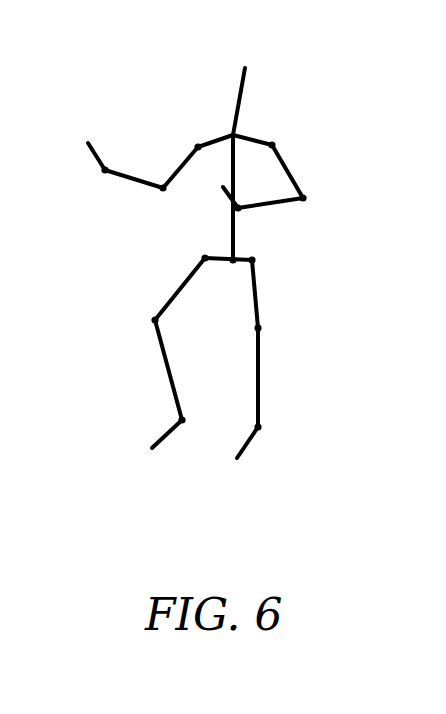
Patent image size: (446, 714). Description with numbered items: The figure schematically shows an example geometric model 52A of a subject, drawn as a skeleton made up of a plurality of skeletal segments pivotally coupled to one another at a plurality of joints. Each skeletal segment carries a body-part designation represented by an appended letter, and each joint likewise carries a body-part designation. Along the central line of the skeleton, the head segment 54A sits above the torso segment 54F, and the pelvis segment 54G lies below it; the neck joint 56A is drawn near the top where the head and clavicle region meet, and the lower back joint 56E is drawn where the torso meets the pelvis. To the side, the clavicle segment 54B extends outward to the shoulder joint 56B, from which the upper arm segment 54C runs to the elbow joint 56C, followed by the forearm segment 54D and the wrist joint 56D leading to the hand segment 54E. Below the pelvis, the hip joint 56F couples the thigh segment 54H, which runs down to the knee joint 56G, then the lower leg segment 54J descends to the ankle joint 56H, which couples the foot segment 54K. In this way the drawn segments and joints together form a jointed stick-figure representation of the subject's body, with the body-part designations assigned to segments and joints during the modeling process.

The geometric model 52A is at (340, 444).
The head skeletal segment 54A is at (244, 80).
The clavicle skeletal segment 54B is at (252, 137).
The upper arm skeletal segment 54C is at (188, 158).
The forearm skeletal segment 54D is at (275, 207).
The hand skeletal segment 54E is at (92, 145).
The torso skeletal segment 54F is at (228, 232).
The pelvis skeletal segment 54G is at (218, 263).
The thigh skeletal segment 54H is at (180, 293).
The lower leg skeletal segment 54J is at (260, 377).
The foot skeletal segment 54K is at (160, 440).
The neck joint 56A is at (224, 134).
The shoulder joint 56B is at (277, 144).
The elbow joint 56C is at (160, 192).
The wrist joint 56D is at (257, 200).
The lower back joint 56E is at (237, 258).
The hip joint 56F is at (254, 264).
The knee joint 56G is at (262, 328).
The ankle joint 56H is at (255, 427).